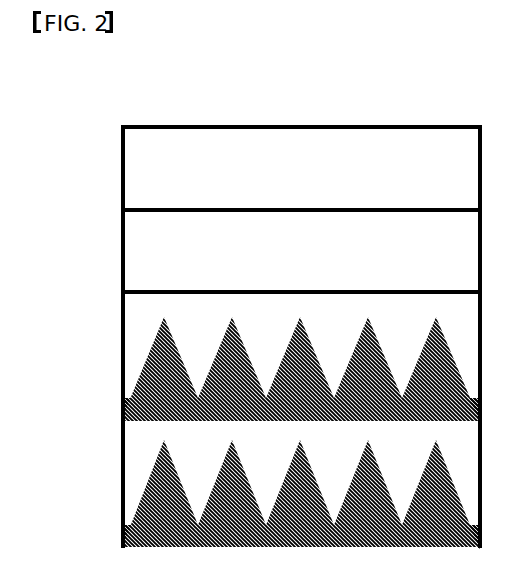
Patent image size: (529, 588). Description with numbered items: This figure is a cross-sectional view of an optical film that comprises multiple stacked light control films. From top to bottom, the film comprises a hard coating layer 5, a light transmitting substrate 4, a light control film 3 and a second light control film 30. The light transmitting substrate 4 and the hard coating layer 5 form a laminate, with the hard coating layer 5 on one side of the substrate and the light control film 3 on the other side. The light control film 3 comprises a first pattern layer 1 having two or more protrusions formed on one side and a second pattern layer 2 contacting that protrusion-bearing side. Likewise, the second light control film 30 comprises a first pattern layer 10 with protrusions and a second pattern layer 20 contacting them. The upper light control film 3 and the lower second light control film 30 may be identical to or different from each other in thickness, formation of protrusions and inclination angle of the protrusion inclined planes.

The hard coating layer 5 is at (301, 168).
The light transmitting substrate 4 is at (301, 251).
The light control film 3 is at (270, 419).
The second pattern layer 2 is at (301, 364).
The first pattern layer 1 is at (301, 397).
The second light control film 30 is at (260, 490).
The second pattern layer 20 is at (301, 491).
The first pattern layer 10 is at (301, 522).